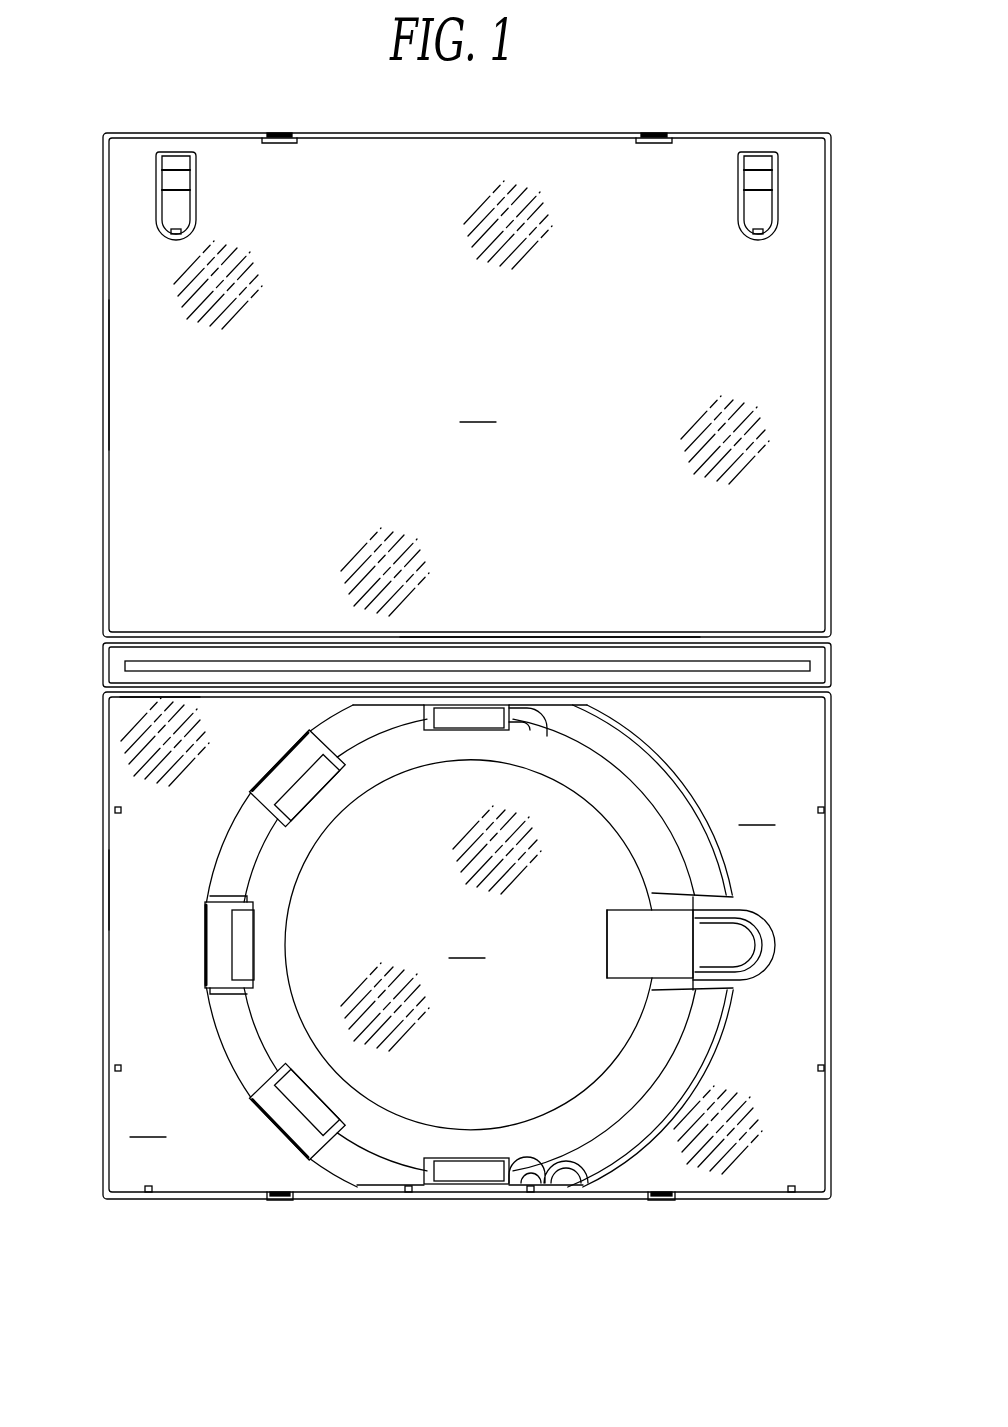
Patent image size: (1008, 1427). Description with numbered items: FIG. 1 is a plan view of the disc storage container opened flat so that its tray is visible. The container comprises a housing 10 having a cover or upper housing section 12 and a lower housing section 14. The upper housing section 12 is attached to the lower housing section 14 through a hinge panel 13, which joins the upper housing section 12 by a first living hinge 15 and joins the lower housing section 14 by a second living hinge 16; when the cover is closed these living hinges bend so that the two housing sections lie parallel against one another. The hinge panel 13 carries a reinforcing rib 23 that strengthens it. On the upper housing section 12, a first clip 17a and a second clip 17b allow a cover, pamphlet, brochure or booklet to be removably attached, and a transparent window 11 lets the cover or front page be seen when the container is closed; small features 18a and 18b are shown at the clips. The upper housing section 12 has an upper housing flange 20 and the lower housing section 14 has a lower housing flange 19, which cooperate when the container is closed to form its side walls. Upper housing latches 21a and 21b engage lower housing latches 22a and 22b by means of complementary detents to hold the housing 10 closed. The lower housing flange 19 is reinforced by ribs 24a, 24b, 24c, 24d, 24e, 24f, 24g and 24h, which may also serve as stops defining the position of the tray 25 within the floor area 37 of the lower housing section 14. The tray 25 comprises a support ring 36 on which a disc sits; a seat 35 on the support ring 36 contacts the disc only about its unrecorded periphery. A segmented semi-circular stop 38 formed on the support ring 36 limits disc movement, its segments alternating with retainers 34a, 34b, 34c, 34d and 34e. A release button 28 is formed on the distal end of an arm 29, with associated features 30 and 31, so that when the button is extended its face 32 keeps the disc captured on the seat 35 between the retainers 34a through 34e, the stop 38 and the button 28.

The housing 10 is at (103, 493).
The transparent window 11 is at (478, 407).
The upper housing section 12 is at (831, 325).
The hinge panel 13 is at (831, 665).
The lower housing section 14 is at (831, 1012).
The first living hinge 15 is at (545, 634).
The second living hinge 16 is at (160, 712).
The first clip 17a is at (180, 215).
The second clip 17b is at (752, 212).
The clip tab 18a is at (173, 240).
The clip tab 18b is at (757, 240).
The lower housing flange 19 is at (109, 888).
The upper housing flange 20 is at (109, 372).
The upper housing latch 21a is at (285, 143).
The upper housing latch 21b is at (660, 143).
The lower housing latch 22a is at (280, 1200).
The lower housing latch 22b is at (662, 1200).
The reinforcing rib 23 is at (150, 662).
The rib 24a is at (121, 810).
The rib 24b is at (121, 1071).
The rib 24c is at (148, 1186).
The rib 24d is at (408, 1186).
The rib 24e is at (530, 1192).
The rib 24f is at (792, 1186).
The rib 24g is at (818, 1068).
The rib 24h is at (818, 810).
The tray 25 is at (468, 945).
The release button 28 is at (782, 935).
The arm 29 is at (628, 912).
The spring member 30 is at (512, 728).
The block inner wall 31 is at (607, 962).
The face 32 is at (693, 948).
The retainer 34a is at (460, 728).
The retainer 34b is at (297, 797).
The retainer 34c is at (248, 950).
The retainer 34d is at (300, 1092).
The retainer 34e is at (478, 1162).
The seat 35 is at (352, 737).
The support ring 36 is at (585, 740).
The tray floor 37 is at (138, 952).
The semi-circular stop 38 is at (375, 712).